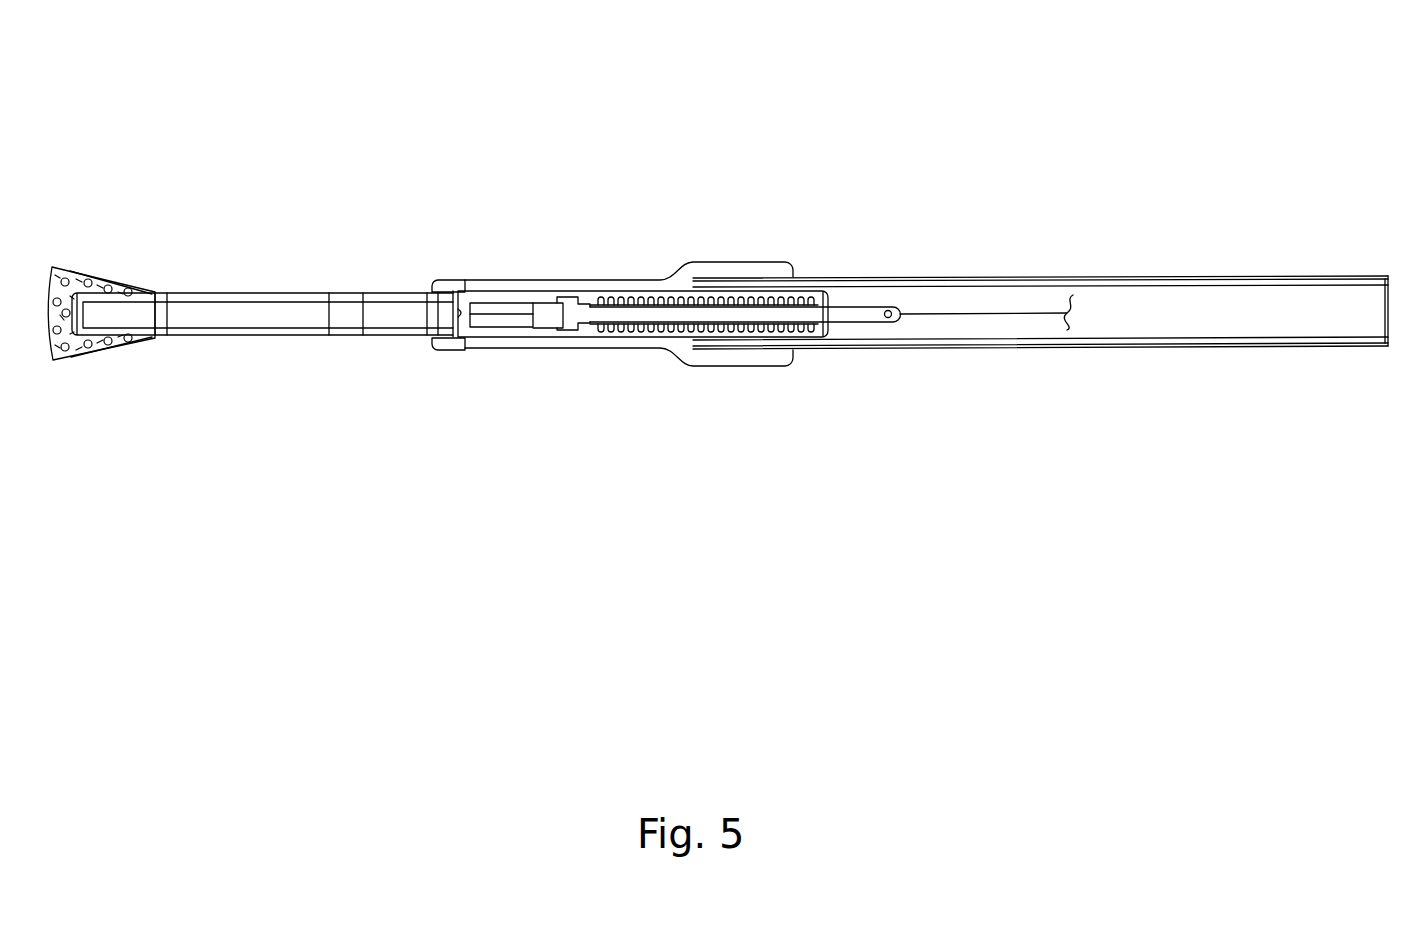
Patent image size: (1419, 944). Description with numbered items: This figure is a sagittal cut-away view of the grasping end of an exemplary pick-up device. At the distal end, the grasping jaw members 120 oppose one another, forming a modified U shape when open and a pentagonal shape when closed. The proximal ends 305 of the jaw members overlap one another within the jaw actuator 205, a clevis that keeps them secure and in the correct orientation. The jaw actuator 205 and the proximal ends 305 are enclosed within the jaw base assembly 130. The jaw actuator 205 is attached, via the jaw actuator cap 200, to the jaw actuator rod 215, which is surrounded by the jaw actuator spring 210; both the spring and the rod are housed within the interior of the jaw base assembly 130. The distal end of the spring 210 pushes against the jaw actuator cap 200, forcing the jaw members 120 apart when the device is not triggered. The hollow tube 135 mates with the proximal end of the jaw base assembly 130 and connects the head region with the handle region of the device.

The grasping jaw members 120 is at (258, 320).
The jaw base assembly 130 is at (635, 278).
The hollow tube 135 is at (1043, 275).
The jaw actuator cap 200 is at (577, 297).
The jaw actuator 205 is at (517, 311).
The proximal ends 305 is at (509, 316).
The jaw actuator spring 210 is at (653, 330).
The jaw actuator rod 215 is at (846, 316).